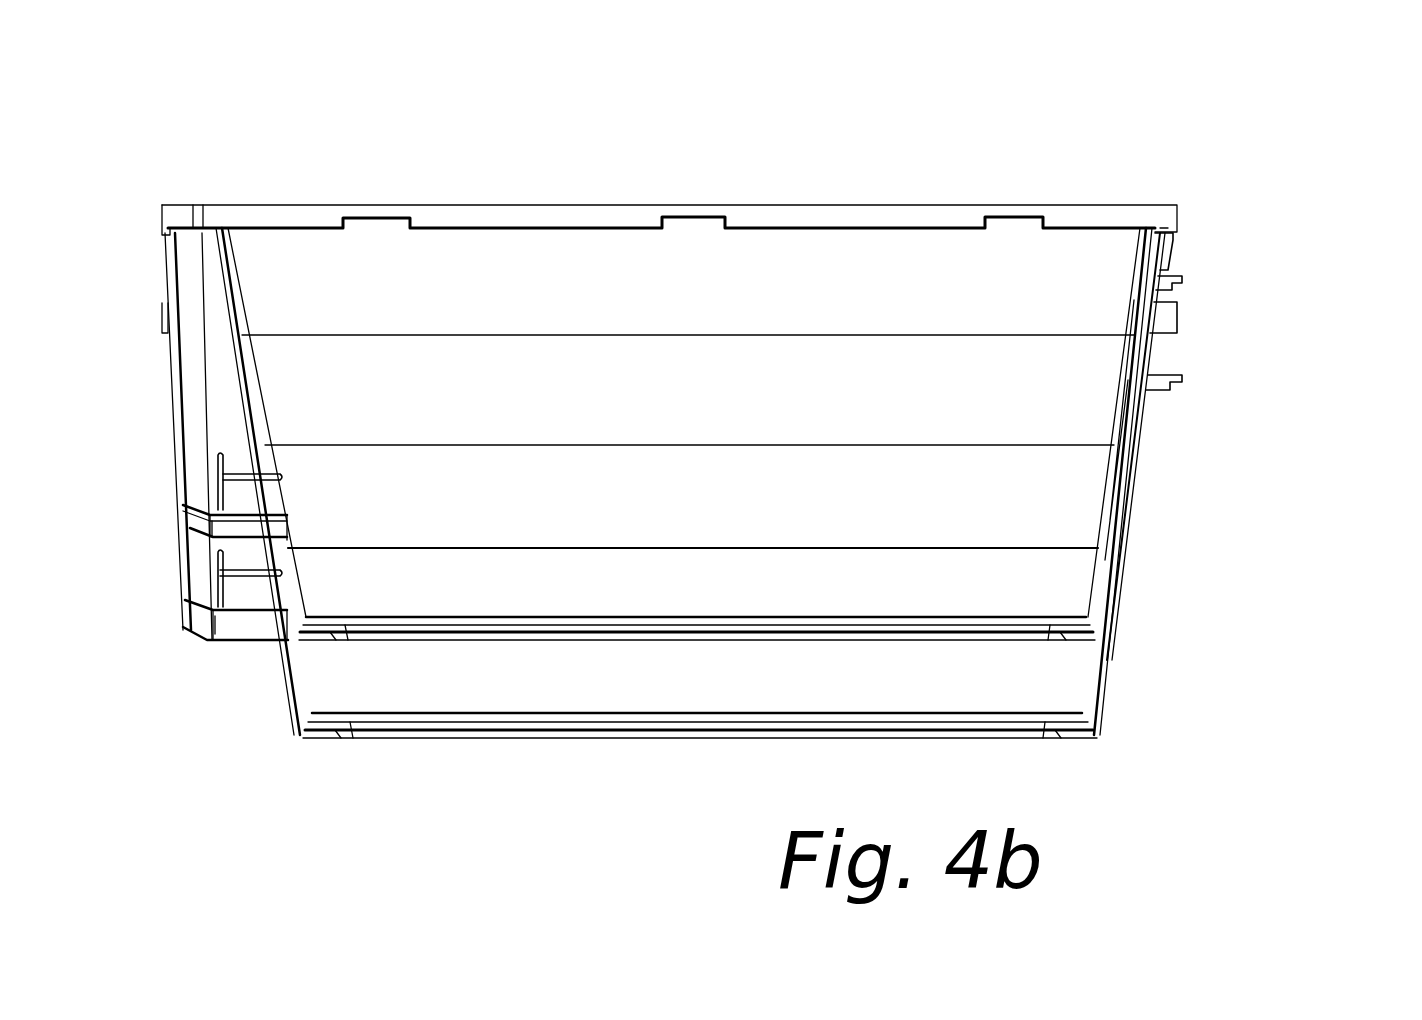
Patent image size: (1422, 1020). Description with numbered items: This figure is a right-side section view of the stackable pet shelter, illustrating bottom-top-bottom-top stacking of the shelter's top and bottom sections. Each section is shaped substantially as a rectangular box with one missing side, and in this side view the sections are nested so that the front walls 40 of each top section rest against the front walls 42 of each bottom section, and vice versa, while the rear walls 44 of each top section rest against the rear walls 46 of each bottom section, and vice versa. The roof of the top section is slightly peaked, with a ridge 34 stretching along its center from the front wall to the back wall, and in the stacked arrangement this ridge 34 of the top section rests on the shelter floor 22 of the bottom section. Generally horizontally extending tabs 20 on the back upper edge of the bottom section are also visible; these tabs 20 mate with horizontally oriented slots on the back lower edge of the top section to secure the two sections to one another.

The tabs 20 is at (1182, 278).
The shelter floor 22 is at (507, 642).
The ridge 34 is at (783, 710).
The front walls 40 is at (228, 655).
The front walls 42 is at (288, 672).
The rear walls 44 is at (1133, 375).
The rear walls 46 is at (1127, 463).